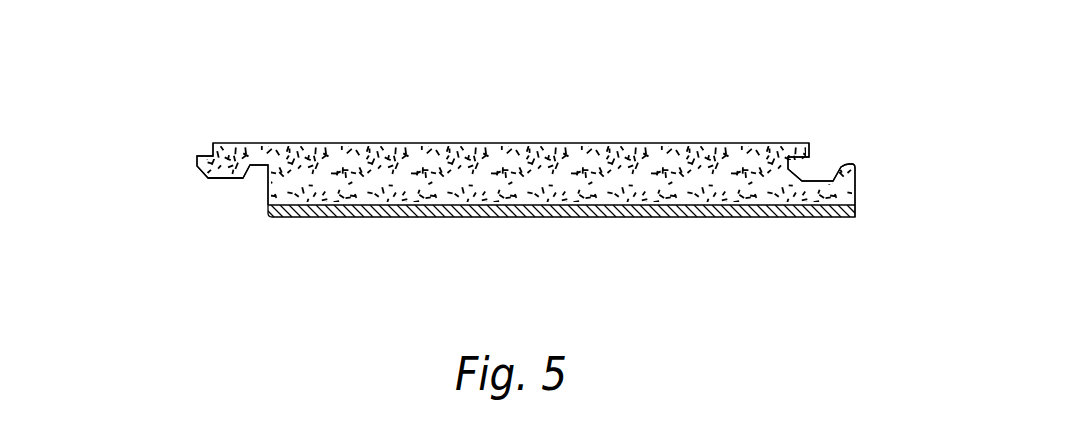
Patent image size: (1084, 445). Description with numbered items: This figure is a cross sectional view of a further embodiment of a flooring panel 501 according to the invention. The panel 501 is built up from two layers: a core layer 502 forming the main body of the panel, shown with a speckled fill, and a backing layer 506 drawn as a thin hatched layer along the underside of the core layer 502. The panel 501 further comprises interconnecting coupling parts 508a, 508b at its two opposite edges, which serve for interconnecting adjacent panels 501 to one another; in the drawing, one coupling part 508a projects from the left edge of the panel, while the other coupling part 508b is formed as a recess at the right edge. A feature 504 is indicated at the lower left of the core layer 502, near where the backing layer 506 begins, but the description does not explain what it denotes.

The flooring panel 501 is at (200, 112).
The core layer 502 is at (467, 165).
The notch 504 is at (252, 185).
The backing layer 506 is at (532, 218).
The interconnecting coupling part 508a is at (190, 178).
The interconnecting coupling part 508b is at (843, 148).